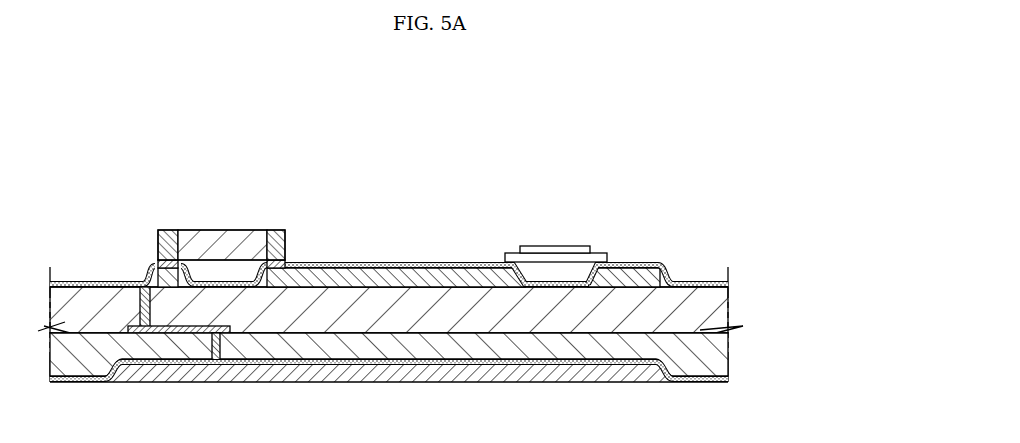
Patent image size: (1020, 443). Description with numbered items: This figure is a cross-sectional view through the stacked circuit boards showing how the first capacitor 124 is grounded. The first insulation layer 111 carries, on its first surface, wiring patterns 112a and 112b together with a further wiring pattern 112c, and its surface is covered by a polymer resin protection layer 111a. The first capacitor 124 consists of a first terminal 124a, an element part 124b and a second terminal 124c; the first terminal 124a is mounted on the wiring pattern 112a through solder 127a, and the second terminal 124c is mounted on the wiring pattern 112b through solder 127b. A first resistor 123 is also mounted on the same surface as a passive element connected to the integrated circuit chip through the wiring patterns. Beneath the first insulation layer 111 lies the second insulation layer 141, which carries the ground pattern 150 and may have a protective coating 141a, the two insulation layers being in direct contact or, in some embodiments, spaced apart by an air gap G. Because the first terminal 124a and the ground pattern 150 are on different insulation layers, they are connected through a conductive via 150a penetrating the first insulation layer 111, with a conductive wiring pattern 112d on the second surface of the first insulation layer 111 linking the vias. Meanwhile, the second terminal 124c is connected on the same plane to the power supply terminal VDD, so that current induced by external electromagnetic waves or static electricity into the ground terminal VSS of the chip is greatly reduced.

The first insulation layer 111 is at (728, 299).
The protection layer 111a is at (668, 276).
The wiring pattern 112a is at (146, 280).
The wiring pattern 112b is at (397, 263).
The insulating layer portion 112c is at (648, 263).
The conductive wiring pattern 112d is at (146, 300).
The first resistor 123 is at (553, 250).
The first capacitor 124 is at (222, 192).
The first terminal 124a is at (172, 246).
The element part 124b is at (223, 231).
The second terminal 124c is at (275, 246).
The solder 127a is at (150, 266).
The solder 127b is at (308, 269).
The second insulation layer 141 is at (728, 353).
The protective coating 141a is at (669, 380).
The ground pattern 150 is at (598, 380).
The conductive via 150a is at (150, 334).
The gap region G is at (359, 432).